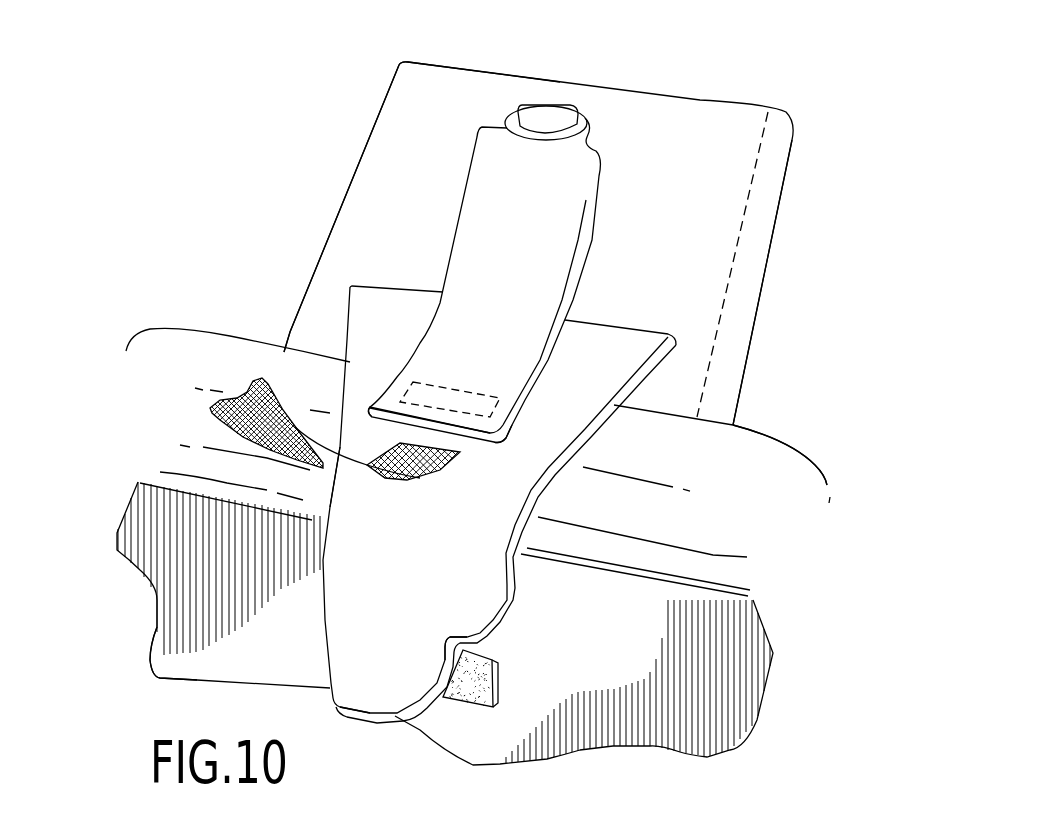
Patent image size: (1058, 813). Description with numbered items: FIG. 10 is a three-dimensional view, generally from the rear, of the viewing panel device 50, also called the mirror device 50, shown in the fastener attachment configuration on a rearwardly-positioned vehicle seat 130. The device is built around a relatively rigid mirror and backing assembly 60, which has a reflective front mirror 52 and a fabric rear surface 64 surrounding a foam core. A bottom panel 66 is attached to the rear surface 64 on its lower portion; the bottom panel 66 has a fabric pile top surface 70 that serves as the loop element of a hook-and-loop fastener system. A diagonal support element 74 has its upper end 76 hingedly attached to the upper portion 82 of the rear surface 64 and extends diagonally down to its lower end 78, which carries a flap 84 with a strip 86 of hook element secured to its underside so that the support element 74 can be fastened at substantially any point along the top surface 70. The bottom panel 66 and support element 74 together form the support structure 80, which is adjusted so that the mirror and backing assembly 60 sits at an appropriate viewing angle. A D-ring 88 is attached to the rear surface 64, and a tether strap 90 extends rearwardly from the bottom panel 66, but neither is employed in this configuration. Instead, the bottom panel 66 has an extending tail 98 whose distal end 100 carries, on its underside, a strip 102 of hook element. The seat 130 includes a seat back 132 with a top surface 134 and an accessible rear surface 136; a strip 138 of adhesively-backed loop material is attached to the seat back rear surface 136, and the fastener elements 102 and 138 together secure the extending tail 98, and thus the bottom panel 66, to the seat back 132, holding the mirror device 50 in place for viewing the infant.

The viewing panel device 50 is at (188, 200).
The mirror 52 is at (770, 267).
The mirror and backing assembly 60 is at (714, 92).
The rear surface 64 is at (673, 247).
The bottom panel 66 is at (543, 443).
The top surface 70 is at (585, 370).
The diagonal support element 74 is at (490, 243).
The upper end 76 is at (573, 170).
The lower end 78 is at (453, 360).
The support structure 80 is at (306, 246).
The upper portion 82 is at (427, 116).
The flap 84 is at (507, 412).
The hook element strip 86 is at (472, 387).
The D-ring 88 is at (533, 137).
The tether strap 90 is at (295, 427).
The extending tail 98 is at (383, 532).
The distal end 100 is at (386, 680).
The hook element strip 102 is at (470, 655).
The vehicle seat 130 is at (800, 420).
The seat back 132 is at (167, 508).
The second body portion 134 is at (690, 478).
The seat back rear surface 136 is at (260, 620).
The loop material strip 138 is at (497, 683).